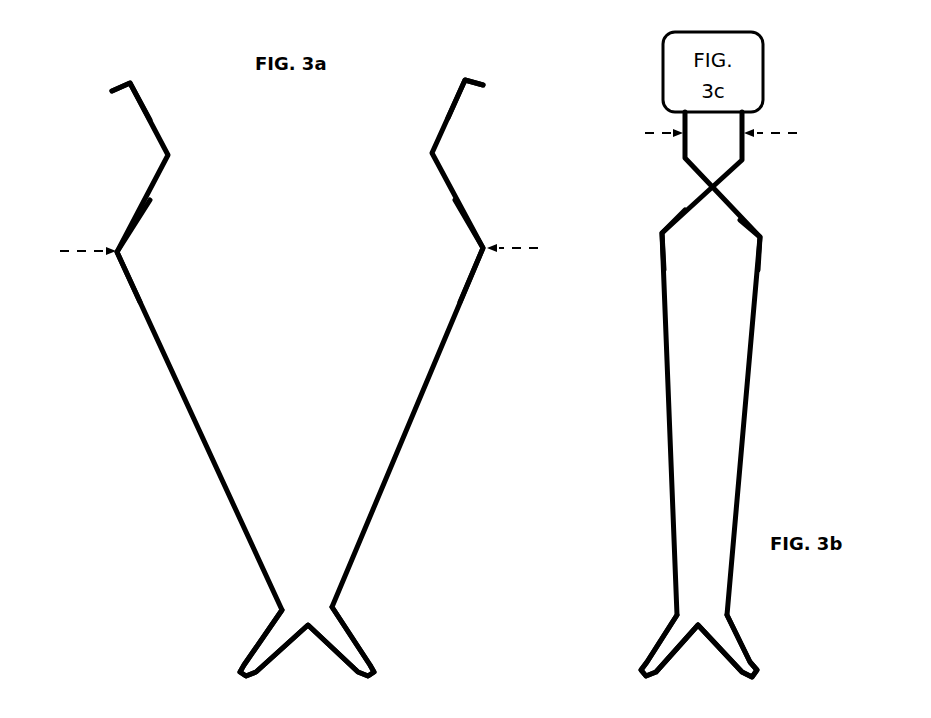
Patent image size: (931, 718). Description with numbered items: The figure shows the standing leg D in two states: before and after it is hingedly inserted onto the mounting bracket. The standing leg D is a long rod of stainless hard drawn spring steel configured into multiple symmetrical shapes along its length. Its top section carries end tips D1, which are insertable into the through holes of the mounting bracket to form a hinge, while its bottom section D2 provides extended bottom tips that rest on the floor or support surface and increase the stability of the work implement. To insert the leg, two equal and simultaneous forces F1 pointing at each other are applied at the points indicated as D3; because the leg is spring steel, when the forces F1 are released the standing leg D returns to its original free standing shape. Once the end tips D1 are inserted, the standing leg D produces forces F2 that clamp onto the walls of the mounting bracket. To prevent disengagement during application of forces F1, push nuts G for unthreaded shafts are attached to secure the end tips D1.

In FIG. 3a, the standing leg D is at (175, 434).
In FIG. 3b, the standing leg D is at (648, 416).
In FIG. 3a, the end tips D1 is at (110, 88).
In FIG. 3a, the bottom section D2 is at (257, 642).
In FIG. 3b, the bottom section D2 is at (657, 640).
In FIG. 3a, the points of force application D3 is at (114, 251).
In FIG. 3b, the points of force application D3 is at (578, 303).
In FIG. 3a, the applied forces F1 is at (297, 247).
In FIG. 3b, the clamping forces F2 is at (715, 133).
In FIG. 3a, the push nuts G is at (455, 708).